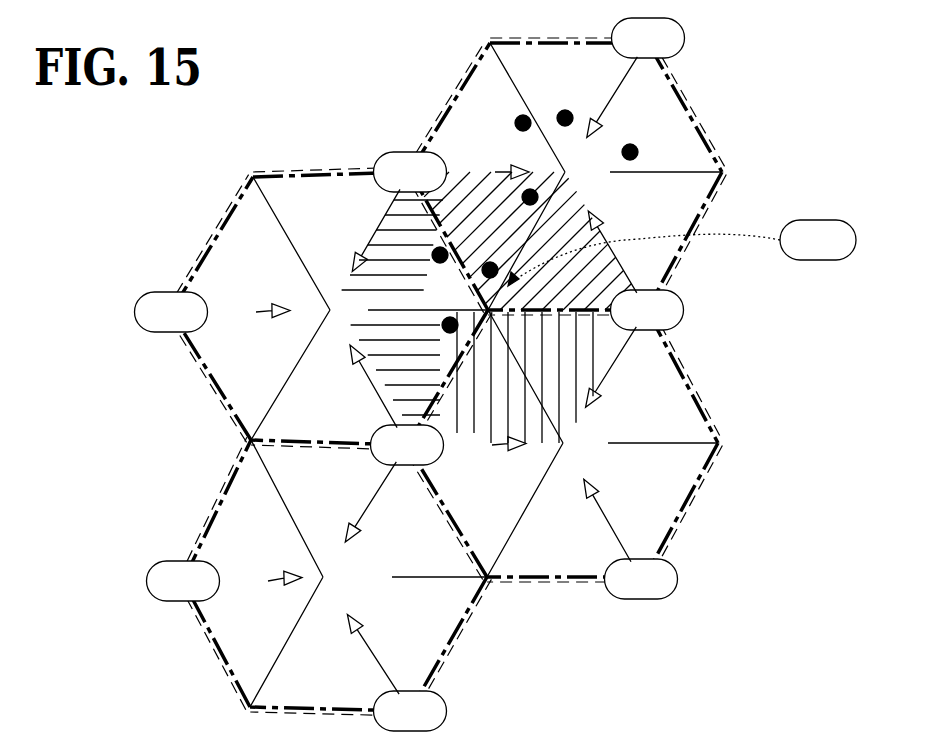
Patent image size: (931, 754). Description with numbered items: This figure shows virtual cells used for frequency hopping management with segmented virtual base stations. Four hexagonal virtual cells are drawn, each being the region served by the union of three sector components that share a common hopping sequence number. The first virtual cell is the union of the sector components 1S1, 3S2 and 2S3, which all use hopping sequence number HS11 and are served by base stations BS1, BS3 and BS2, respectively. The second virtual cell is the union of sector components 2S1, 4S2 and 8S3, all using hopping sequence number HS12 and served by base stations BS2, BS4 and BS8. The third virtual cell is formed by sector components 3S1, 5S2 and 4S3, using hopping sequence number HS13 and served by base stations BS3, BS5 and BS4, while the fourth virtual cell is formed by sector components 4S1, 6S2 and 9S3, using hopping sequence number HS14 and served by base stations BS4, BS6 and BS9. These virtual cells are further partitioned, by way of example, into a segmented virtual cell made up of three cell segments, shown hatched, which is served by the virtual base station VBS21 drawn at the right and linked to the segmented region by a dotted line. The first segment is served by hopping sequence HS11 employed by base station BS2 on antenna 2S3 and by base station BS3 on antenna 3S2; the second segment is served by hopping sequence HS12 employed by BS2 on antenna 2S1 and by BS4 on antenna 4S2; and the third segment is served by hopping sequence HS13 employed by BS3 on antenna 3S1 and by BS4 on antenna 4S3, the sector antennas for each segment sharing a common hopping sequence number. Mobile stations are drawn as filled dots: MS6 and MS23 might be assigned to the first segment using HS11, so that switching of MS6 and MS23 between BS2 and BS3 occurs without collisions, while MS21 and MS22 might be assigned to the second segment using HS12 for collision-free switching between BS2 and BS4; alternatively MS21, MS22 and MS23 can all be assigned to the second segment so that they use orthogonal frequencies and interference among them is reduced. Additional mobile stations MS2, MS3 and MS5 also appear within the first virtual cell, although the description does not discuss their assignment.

The virtual base station VBS21 is at (818, 240).
The base station BS1 is at (648, 38).
The base station BS2 is at (410, 172).
The base station BS3 is at (647, 310).
The base station BS4 is at (407, 445).
The base station BS5 is at (641, 579).
The base station BS6 is at (410, 711).
The base station BS8 is at (171, 312).
The base station BS9 is at (183, 581).
The hopping sequence number HS11 is at (581, 183).
The hopping sequence number HS12 is at (342, 324).
The hopping sequence number HS13 is at (580, 449).
The hopping sequence number HS14 is at (362, 585).
The mobile station 2 MS2 is at (563, 104).
The mobile station 3 MS3 is at (628, 142).
The mobile station 5 MS5 is at (502, 135).
The mobile station MS6 is at (512, 208).
The mobile station MS21 is at (420, 266).
The mobile station MS22 is at (431, 337).
The mobile station MS23 is at (502, 259).
The sector component 1S1 is at (614, 97).
The sector antenna 2S1 is at (376, 230).
The sector antenna 2S3 is at (487, 173).
The sector antenna 3S1 is at (611, 367).
The sector antenna 3S2 is at (612, 252).
The sector component 4S1 is at (372, 502).
The sector antenna 4S2 is at (373, 386).
The sector antenna 4S3 is at (486, 446).
The sector component 5S2 is at (607, 520).
The sector component 6S2 is at (373, 655).
The sector component 8S3 is at (250, 313).
The sector component 9S3 is at (264, 581).